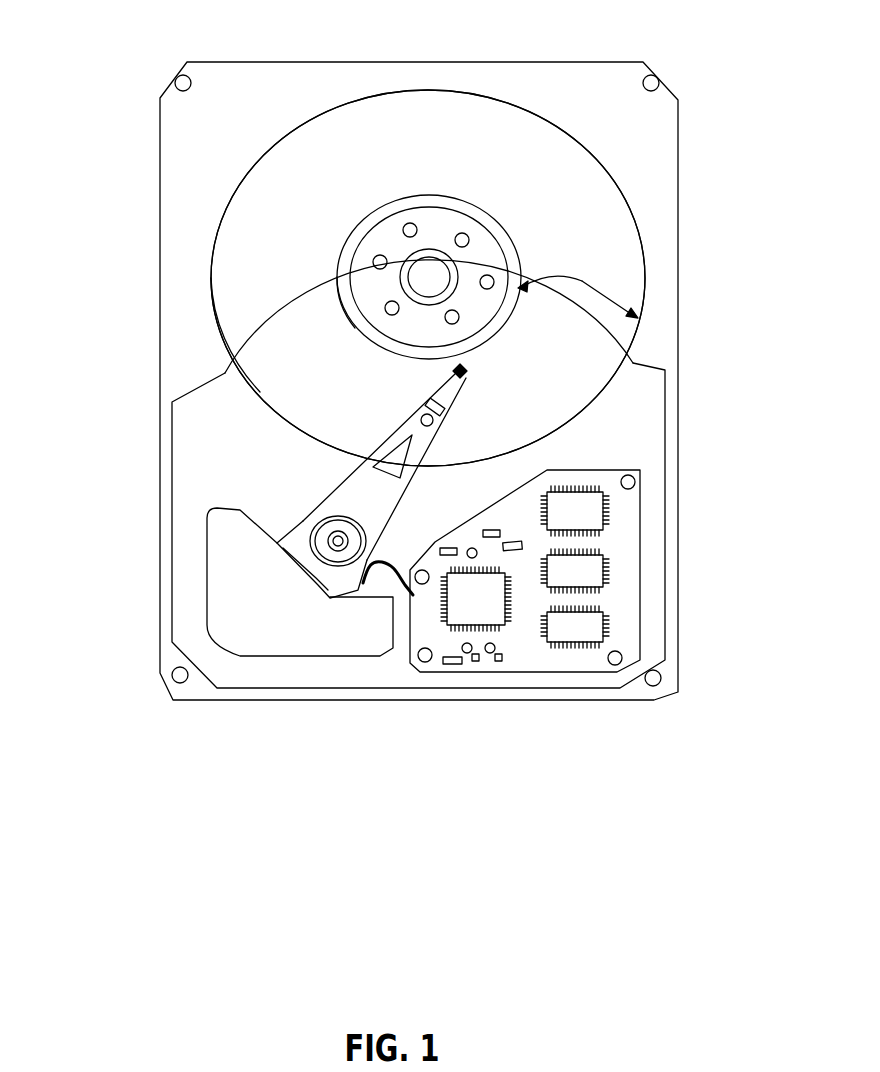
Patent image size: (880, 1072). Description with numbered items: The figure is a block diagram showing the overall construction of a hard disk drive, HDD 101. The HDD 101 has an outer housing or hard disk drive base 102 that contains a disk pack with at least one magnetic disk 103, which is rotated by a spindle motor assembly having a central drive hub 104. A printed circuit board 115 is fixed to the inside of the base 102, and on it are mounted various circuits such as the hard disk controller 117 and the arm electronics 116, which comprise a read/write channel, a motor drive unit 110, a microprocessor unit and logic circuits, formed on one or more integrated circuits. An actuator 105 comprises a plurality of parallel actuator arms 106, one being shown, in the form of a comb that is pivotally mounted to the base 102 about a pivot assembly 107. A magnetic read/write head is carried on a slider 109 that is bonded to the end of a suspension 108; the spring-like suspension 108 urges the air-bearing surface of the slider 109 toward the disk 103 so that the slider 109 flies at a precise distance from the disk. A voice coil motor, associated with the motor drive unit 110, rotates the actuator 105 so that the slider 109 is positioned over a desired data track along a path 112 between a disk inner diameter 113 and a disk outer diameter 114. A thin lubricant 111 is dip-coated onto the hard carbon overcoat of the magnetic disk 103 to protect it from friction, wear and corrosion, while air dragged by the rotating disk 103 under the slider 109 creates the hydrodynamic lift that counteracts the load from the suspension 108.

The hard disk drive 101 is at (407, 61).
The hard disk drive base 102 is at (158, 412).
The magnetic disk 103 is at (310, 145).
The central drive hub 104 is at (368, 218).
The actuator 105 is at (280, 542).
The actuator arm 106 is at (403, 512).
The pivot assembly 107 is at (325, 538).
The suspension 108 is at (430, 393).
The slider 109 is at (466, 372).
The motor drive unit 110 is at (312, 583).
The lubricant 111 is at (508, 150).
The path 112 is at (583, 281).
The disk inner diameter 113 is at (340, 307).
The disk outer diameter 114 is at (230, 353).
The printed circuit board 115 is at (638, 503).
The arm electronics 116 is at (607, 570).
The hard disk controller 117 is at (608, 633).